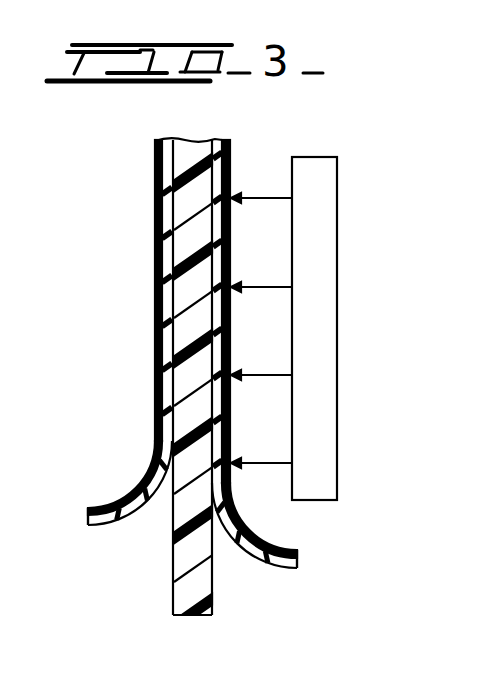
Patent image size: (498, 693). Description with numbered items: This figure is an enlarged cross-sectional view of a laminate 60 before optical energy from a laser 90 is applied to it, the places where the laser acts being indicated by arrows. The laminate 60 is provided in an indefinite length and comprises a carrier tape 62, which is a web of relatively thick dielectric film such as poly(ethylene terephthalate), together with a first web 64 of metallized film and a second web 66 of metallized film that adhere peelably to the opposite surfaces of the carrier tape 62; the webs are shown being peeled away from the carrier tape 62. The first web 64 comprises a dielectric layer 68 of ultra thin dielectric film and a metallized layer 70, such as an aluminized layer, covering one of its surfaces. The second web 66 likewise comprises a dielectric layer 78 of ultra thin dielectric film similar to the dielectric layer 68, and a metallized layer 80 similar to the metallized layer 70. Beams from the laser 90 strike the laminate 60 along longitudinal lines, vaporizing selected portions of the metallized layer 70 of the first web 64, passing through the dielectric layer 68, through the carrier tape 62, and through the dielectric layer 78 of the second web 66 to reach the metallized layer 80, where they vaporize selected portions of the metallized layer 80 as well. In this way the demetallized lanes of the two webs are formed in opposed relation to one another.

The laminate 60 is at (136, 186).
The carrier tape 62 is at (185, 596).
The first web 64 is at (292, 582).
The second web 66 is at (93, 545).
The dielectric layer 68 is at (250, 550).
The metallized layer 70 is at (268, 547).
The dielectric layer 78 is at (124, 512).
The metallized layer 80 is at (126, 492).
The laser 90 is at (292, 172).